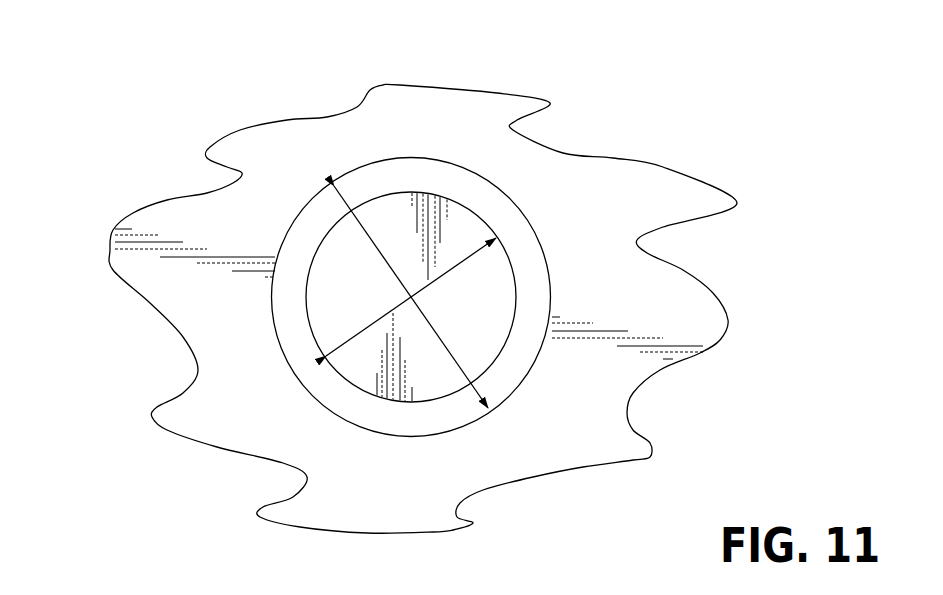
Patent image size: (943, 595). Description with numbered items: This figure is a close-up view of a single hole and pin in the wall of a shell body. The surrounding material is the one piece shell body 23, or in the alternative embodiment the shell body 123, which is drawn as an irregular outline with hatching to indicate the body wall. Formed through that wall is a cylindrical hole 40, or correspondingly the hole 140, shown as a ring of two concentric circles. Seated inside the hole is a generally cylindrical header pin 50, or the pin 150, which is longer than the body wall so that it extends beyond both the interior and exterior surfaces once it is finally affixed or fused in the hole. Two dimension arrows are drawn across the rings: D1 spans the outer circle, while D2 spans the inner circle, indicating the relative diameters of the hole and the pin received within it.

The one piece shell body 23 is at (400, 308).
The shell body 123 is at (212, 222).
The cylindrical hole 40 is at (482, 260).
The cylindrical hole 140 is at (498, 187).
The header pin 50 is at (398, 219).
The header pin 150 is at (385, 222).
The outer diameter D1 is at (443, 345).
The inner diameter D2 is at (453, 272).